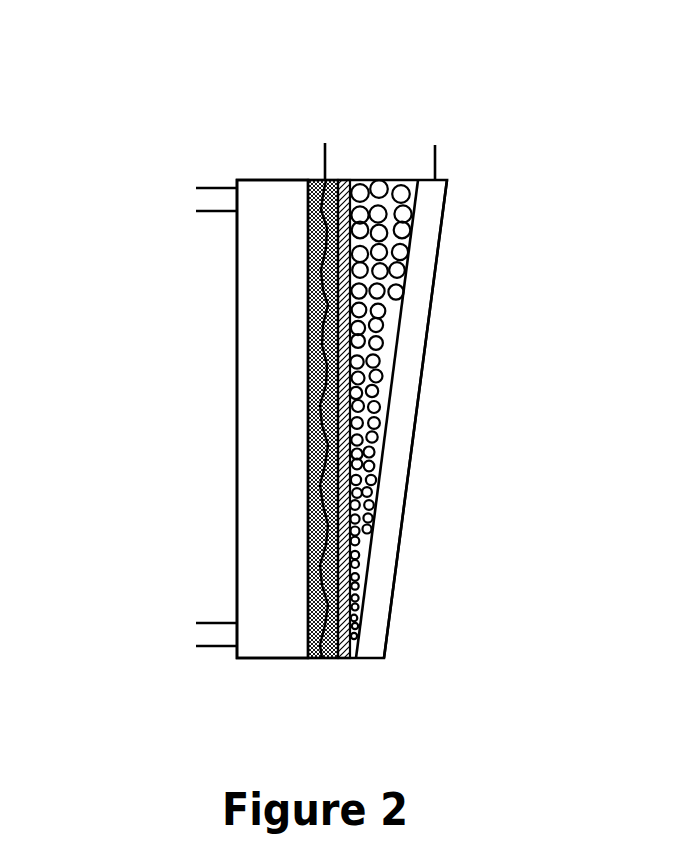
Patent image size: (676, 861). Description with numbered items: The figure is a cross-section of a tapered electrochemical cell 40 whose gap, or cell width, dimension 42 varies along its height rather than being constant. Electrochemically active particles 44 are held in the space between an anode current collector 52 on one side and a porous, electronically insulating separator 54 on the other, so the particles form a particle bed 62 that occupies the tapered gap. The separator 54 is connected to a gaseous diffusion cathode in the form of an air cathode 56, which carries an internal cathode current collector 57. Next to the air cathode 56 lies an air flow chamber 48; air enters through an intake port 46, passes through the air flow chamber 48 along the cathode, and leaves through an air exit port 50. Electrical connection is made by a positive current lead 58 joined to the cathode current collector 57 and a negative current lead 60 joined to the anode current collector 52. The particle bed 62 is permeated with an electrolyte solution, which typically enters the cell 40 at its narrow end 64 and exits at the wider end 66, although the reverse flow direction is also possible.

The tapered electrochemical cell 40 is at (140, 140).
The gap dimension 42 is at (420, 176).
The electrochemically active particles 44 is at (385, 223).
The intake port 46 is at (196, 198).
The air flow chamber 48 is at (287, 384).
The air exit port 50 is at (207, 633).
The anode current collector 52 is at (415, 310).
The separator 54 is at (342, 659).
The air cathode 56 is at (318, 615).
The cathode current collector 57 is at (320, 225).
The positive current lead 58 is at (322, 168).
The negative current lead 60 is at (436, 167).
The particle bed 62 is at (394, 350).
The narrow end 64 is at (351, 666).
The wider end 66 is at (381, 110).